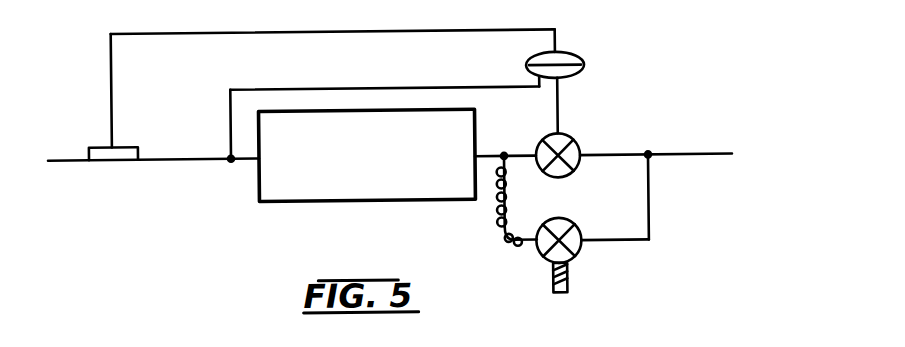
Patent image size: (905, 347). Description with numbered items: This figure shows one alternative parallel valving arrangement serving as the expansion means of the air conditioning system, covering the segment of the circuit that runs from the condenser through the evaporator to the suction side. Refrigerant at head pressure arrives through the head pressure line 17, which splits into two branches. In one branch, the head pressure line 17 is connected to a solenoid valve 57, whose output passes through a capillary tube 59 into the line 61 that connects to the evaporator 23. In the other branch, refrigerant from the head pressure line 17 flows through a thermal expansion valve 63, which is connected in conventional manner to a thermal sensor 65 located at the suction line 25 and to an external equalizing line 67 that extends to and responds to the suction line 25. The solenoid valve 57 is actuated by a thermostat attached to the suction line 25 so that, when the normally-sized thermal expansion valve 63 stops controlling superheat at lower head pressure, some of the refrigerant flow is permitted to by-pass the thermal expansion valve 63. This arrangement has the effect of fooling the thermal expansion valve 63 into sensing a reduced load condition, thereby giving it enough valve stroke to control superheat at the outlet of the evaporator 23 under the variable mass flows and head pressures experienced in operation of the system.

The head pressure line 17 is at (710, 157).
The evaporator 23 is at (337, 200).
The suction line 25 is at (70, 155).
The solenoid valve 57 is at (572, 266).
The capillary tube 59 is at (500, 208).
The line 61 is at (487, 157).
The thermal expansion valve 63 is at (559, 113).
The thermal sensor 65 is at (118, 144).
The external equalizing line 67 is at (348, 88).